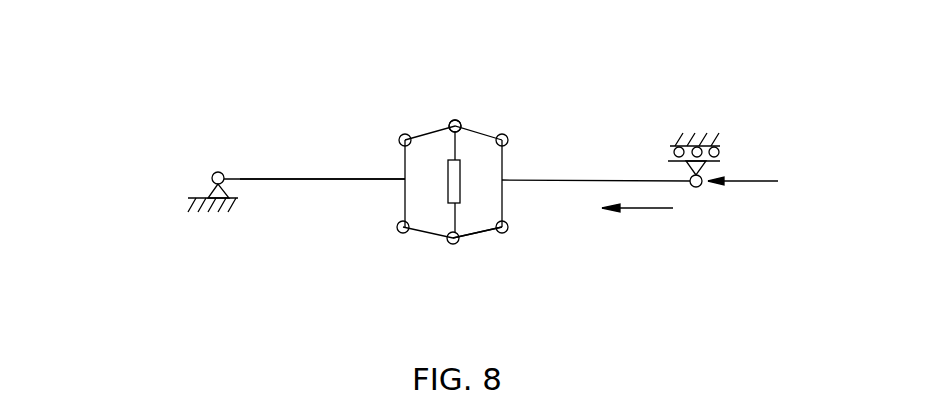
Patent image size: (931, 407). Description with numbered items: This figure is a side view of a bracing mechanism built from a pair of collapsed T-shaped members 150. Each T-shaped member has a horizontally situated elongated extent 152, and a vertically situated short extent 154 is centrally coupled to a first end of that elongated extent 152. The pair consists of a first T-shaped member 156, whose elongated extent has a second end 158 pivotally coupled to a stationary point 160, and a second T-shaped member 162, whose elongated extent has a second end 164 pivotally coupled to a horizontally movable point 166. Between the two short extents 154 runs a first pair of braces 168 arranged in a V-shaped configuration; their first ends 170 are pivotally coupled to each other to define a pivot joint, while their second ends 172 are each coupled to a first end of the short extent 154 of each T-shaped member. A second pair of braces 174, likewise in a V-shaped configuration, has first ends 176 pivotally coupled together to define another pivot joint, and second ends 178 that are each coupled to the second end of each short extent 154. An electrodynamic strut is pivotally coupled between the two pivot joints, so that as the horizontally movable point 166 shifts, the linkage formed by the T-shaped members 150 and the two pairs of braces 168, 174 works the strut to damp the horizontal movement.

The collapsed T-shaped members 150 is at (345, 192).
The elongated extent 152 is at (300, 178).
The short extent 154 is at (403, 167).
The first T-shaped member 156 is at (266, 196).
The second end 158 is at (218, 172).
The stationary point 160 is at (188, 197).
The second T-shaped member 162 is at (597, 163).
The second end 164 is at (696, 187).
The horizontally movable point 166 is at (720, 150).
The first pair of braces 168 is at (463, 113).
The first ends 170 is at (461, 125).
The second ends 172 is at (403, 132).
The second pair of braces 174 is at (453, 254).
The first ends 176 is at (463, 243).
The second ends 178 is at (400, 232).